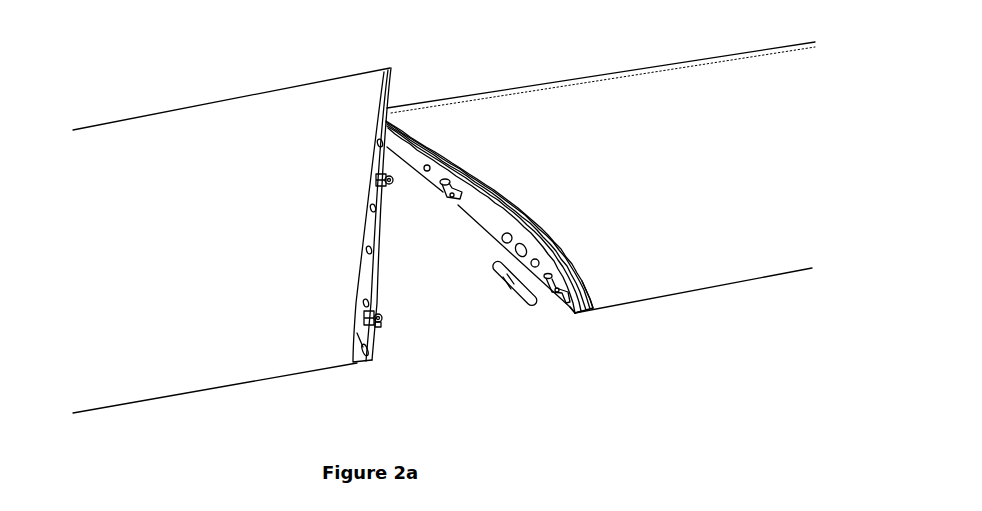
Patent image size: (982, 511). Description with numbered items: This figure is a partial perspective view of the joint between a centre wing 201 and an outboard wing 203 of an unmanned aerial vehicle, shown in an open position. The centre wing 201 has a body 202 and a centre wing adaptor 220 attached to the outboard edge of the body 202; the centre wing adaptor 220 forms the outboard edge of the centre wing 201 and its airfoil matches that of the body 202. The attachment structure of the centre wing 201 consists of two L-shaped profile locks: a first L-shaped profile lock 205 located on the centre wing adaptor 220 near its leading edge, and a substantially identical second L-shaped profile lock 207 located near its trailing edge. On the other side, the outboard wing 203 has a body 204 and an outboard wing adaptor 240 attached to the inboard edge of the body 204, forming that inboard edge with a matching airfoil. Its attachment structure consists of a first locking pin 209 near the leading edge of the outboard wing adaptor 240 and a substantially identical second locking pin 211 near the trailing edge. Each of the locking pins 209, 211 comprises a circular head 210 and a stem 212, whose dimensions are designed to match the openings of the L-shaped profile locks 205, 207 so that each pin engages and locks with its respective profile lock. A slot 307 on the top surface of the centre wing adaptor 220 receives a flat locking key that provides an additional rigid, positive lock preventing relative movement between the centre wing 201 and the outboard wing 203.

The centre wing 201 is at (733, 265).
The body 202 is at (650, 160).
The outboard wing 203 is at (253, 363).
The body 204 is at (160, 258).
The first L-shaped profile lock 205 is at (550, 295).
The second L-shaped profile lock 207 is at (450, 193).
The first locking pin 209 is at (378, 320).
The circular head 210 is at (383, 170).
The second locking pin 211 is at (387, 150).
The stem 212 is at (378, 183).
The centre wing adaptor 220 is at (575, 313).
The outboard wing adaptor 240 is at (368, 352).
The slot 307 is at (590, 288).